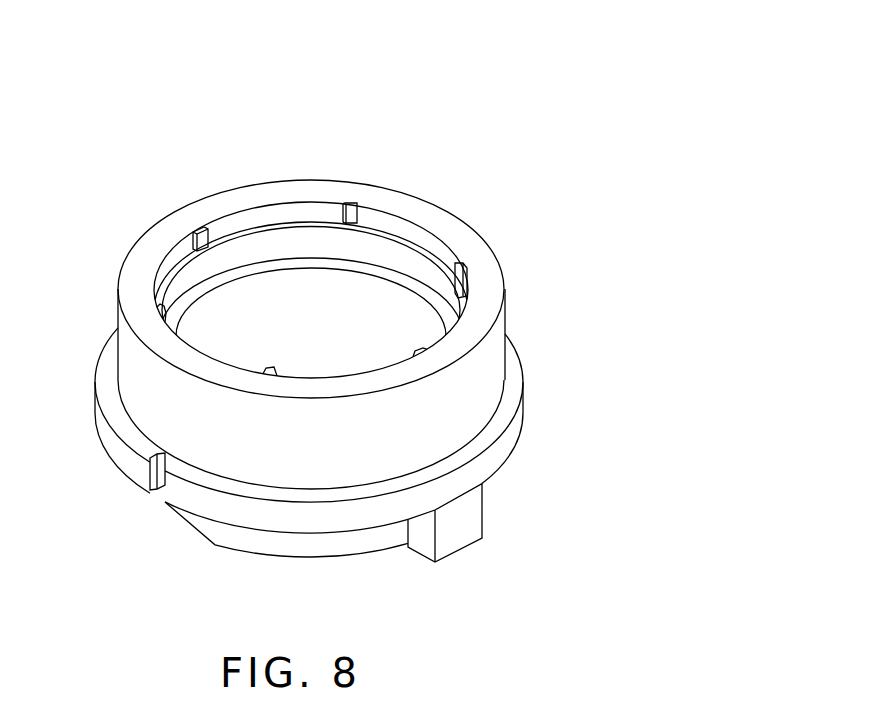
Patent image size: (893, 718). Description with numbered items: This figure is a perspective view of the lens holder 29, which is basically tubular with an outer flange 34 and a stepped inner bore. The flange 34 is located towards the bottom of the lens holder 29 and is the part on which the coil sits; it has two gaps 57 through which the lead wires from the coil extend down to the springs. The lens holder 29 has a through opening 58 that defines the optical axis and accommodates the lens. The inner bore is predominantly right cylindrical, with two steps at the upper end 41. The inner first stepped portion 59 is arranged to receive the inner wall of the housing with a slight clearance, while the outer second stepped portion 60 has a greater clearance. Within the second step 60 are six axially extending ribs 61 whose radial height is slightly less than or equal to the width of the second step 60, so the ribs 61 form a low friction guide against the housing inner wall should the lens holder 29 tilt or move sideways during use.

The lens holder 29 is at (467, 153).
The upper end 41 is at (137, 271).
The outer flange 34 is at (513, 373).
The gaps 57 is at (157, 478).
The through opening 58 is at (318, 322).
The inner first stepped portion 59 is at (266, 265).
The outer second stepped portion 60 is at (230, 235).
The axially extending ribs 61 is at (195, 231).